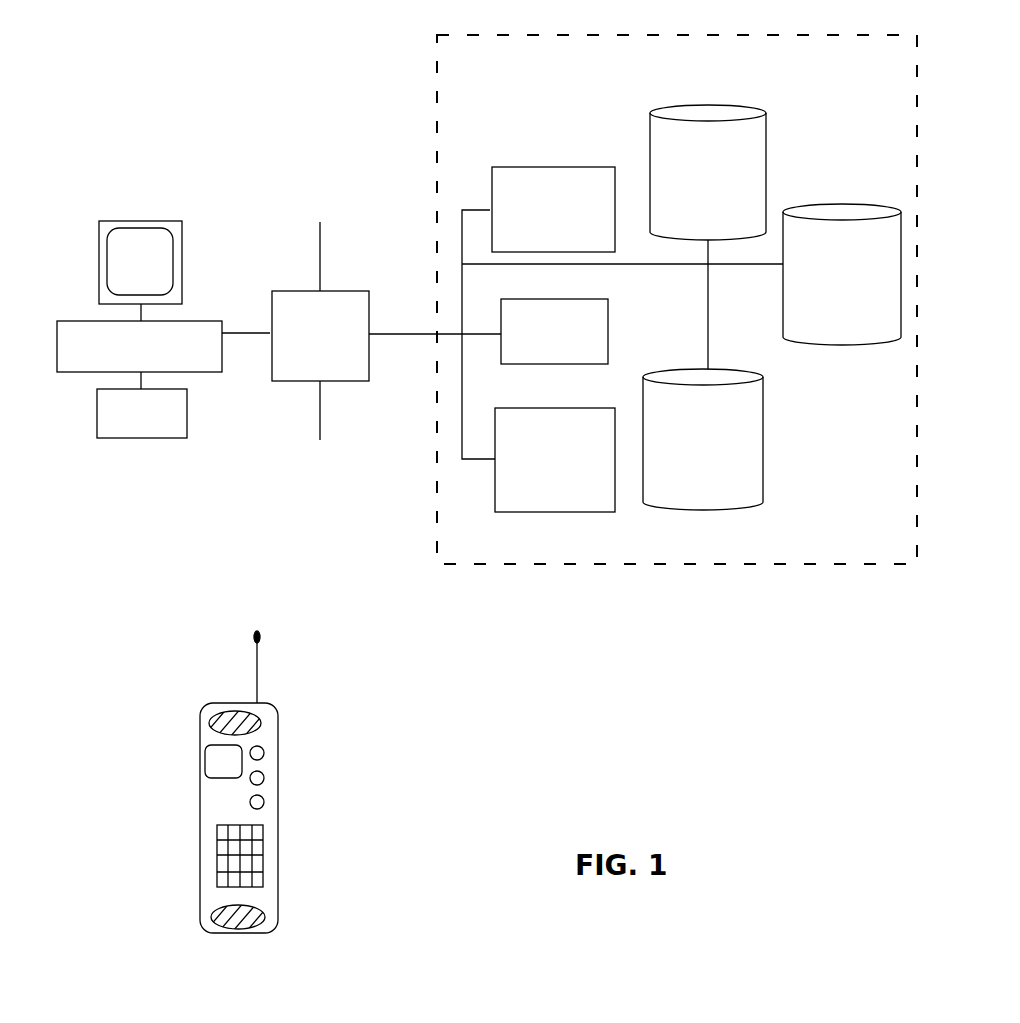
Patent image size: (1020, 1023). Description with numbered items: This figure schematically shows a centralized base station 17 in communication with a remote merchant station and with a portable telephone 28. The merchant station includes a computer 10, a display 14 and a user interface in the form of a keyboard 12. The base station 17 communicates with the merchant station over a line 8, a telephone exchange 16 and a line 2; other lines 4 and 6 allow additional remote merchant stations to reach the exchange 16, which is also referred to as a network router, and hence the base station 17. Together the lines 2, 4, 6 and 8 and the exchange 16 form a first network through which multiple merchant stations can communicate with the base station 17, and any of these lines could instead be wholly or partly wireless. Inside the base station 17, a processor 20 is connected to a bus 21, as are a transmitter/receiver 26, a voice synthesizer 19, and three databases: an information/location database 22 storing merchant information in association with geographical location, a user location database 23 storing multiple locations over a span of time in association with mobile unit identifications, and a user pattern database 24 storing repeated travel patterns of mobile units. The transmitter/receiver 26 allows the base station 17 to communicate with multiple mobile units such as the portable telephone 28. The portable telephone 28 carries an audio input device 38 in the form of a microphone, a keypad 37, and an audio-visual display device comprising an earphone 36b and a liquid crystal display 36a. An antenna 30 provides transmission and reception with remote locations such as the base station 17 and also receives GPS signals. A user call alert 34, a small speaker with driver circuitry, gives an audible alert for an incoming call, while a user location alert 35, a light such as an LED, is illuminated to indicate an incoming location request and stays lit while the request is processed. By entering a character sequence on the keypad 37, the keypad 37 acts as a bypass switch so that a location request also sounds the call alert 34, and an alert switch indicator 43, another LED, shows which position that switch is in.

The line 2 is at (241, 338).
The line 4 is at (318, 413).
The line 6 is at (318, 260).
The line 8 is at (395, 337).
The computer 10 is at (203, 320).
The keyboard 12 is at (190, 407).
The display 14 is at (100, 283).
The telephone exchange 16 is at (320, 336).
The base station 17 is at (427, 508).
The voice synthesizer 19 is at (553, 209).
The processor 20 is at (535, 331).
The bus 21 is at (455, 231).
The information/location database 22 is at (708, 237).
The user location database 23 is at (842, 274).
The user pattern database 24 is at (703, 439).
The transmitter/receiver 26 is at (555, 460).
The portable telephone 28 is at (200, 878).
The antenna 30 is at (265, 668).
The user call alert 34 is at (264, 802).
The user location alert 35 is at (264, 753).
The liquid crystal display 36a is at (205, 760).
The earphone 36b is at (262, 725).
The keypad 37 is at (268, 848).
The audio input device 38 is at (265, 910).
The alert switch indicator 43 is at (264, 778).